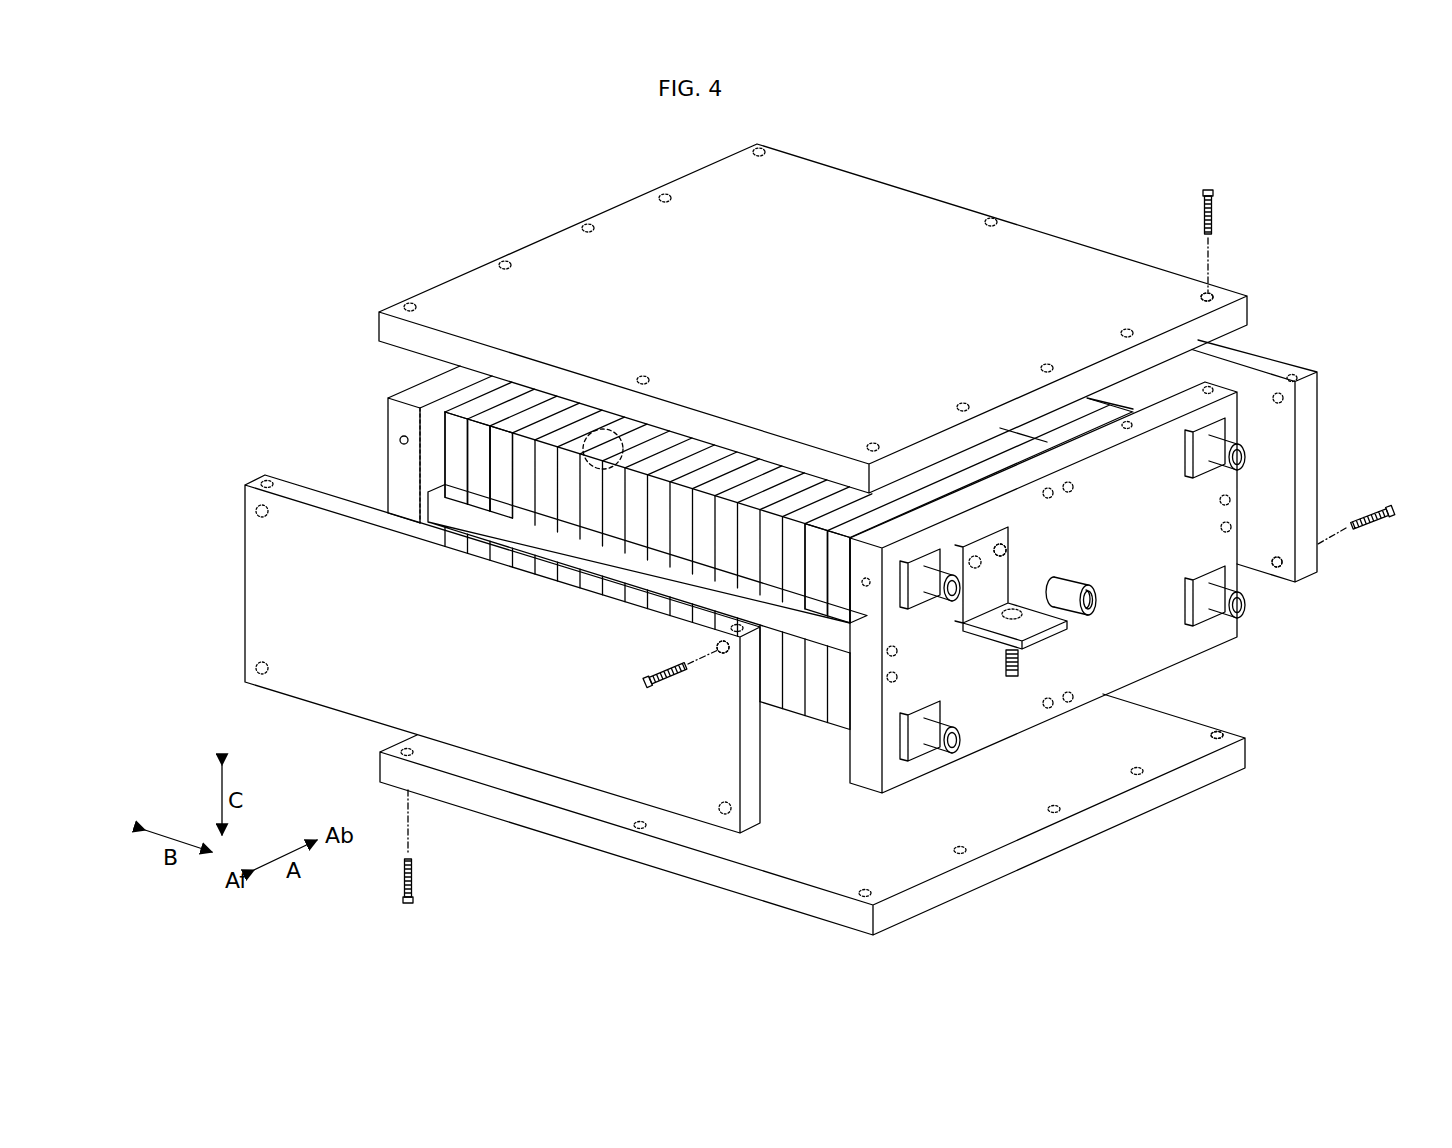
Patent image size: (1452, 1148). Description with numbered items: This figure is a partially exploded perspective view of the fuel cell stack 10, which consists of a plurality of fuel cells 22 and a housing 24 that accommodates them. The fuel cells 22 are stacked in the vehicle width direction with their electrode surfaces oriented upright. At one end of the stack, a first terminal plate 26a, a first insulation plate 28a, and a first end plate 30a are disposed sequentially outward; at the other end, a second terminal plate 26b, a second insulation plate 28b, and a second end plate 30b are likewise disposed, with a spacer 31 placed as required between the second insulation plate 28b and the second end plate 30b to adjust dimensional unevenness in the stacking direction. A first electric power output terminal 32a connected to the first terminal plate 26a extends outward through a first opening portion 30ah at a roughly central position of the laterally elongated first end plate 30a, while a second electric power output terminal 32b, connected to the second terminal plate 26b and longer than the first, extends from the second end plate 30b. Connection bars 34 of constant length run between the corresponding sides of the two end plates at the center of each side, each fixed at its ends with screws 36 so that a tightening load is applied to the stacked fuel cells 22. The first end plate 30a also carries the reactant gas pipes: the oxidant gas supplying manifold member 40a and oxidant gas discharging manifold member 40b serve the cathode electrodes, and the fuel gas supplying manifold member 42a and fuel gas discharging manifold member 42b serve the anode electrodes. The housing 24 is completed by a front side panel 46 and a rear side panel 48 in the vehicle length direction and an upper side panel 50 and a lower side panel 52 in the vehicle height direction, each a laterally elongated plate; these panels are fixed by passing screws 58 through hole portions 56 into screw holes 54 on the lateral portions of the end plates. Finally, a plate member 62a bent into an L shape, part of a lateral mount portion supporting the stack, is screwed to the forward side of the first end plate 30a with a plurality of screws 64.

The fuel cell stack 10 is at (580, 147).
The fuel cells 22 is at (778, 547).
The housing 24 is at (540, 215).
The first terminal plate 26a is at (822, 545).
The second terminal plate 26b is at (504, 490).
The first insulation plate 28a is at (843, 547).
The second insulation plate 28b is at (484, 484).
The first end plate 30a is at (1245, 433).
The first opening portion 30ah is at (1088, 596).
The second end plate 30b is at (395, 392).
The spacer 31 is at (458, 478).
The first electric power output terminal 32a is at (1071, 583).
The second electric power output terminal 32b is at (608, 435).
The connection bars 34 is at (1000, 452).
The screws 36 is at (1050, 498).
The oxidant gas supplying manifold member 40a is at (1240, 460).
The oxidant gas discharging manifold member 40b is at (952, 752).
The fuel gas supplying manifold member 42a is at (1207, 606).
The fuel gas discharging manifold member 42b is at (917, 560).
The front side panel 46 is at (318, 522).
The rear side panel 48 is at (1312, 432).
The upper side panel 50 is at (1067, 268).
The lower side panel 52 is at (1170, 790).
The screw holes 54 is at (1212, 388).
The hole portions 56 is at (1214, 298).
The screws 58 is at (1215, 222).
The plate member 62a is at (987, 626).
The screws 64 is at (1006, 548).